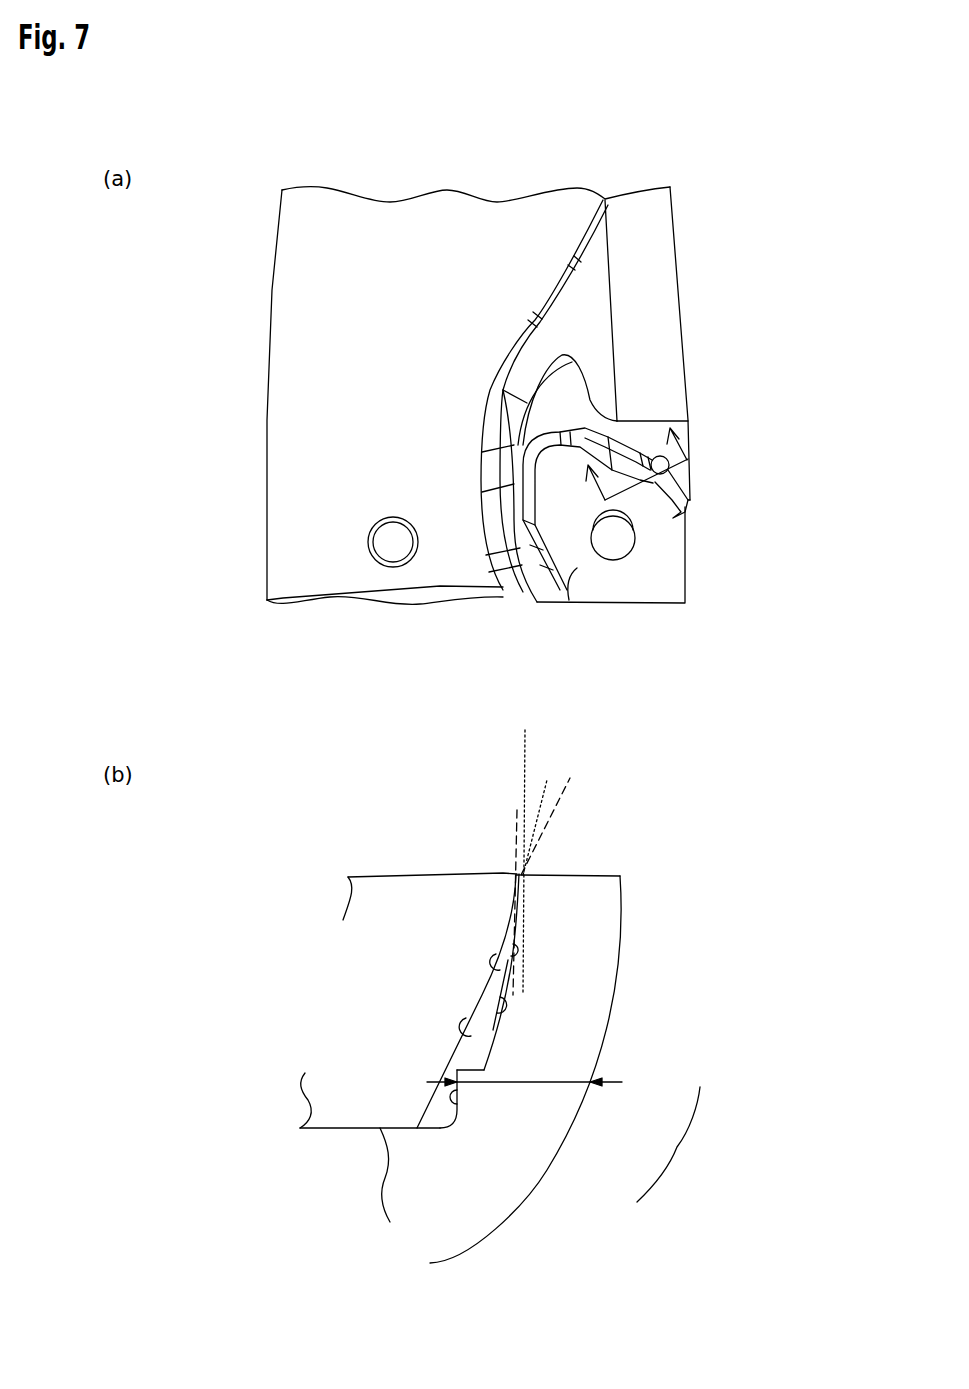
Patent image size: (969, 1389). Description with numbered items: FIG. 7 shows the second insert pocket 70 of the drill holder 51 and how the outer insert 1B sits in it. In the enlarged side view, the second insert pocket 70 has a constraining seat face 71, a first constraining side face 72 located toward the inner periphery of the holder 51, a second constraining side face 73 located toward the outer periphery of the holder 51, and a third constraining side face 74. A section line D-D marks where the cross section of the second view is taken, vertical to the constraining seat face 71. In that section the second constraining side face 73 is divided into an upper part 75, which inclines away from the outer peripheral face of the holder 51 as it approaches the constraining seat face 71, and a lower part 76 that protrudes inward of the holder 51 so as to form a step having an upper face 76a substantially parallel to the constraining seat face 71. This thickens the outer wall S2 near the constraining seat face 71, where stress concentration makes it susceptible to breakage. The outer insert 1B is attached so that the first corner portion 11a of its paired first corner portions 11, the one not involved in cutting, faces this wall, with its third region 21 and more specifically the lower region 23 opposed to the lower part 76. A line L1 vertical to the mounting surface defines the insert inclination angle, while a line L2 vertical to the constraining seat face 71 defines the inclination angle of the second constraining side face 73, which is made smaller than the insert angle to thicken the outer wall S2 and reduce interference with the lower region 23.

The holder 51 is at (298, 333).
The second insert pocket 70 is at (628, 438).
The constraining seat face 71 is at (650, 570).
The first constraining side face 72 is at (577, 568).
The second constraining side face 73 is at (657, 490).
The third constraining side face 74 is at (593, 453).
The upper part 75 is at (497, 1007).
The lower part 76 is at (458, 1112).
The upper face 76a is at (456, 1062).
The outer insert 1B is at (358, 876).
The first corner portion 11 is at (471, 826).
The first corner portion 11a is at (517, 873).
The third region 21 is at (455, 1040).
The lower region 23 is at (501, 972).
The outer wall S2 is at (683, 484).
The line D- D is at (624, 448).
The line L1 is at (515, 823).
The line L2 is at (527, 745).